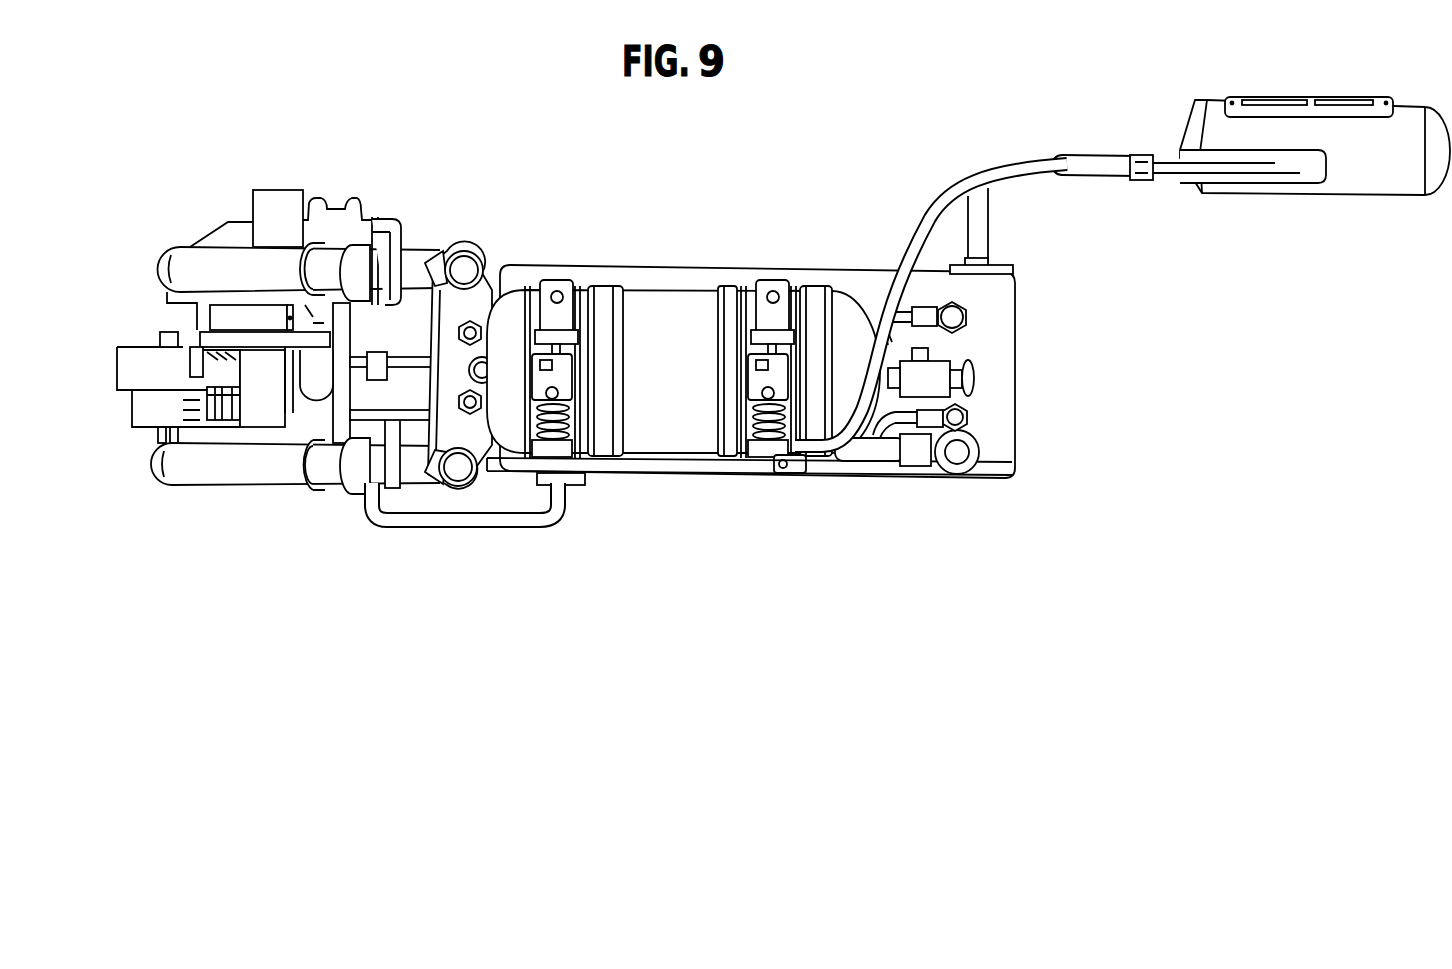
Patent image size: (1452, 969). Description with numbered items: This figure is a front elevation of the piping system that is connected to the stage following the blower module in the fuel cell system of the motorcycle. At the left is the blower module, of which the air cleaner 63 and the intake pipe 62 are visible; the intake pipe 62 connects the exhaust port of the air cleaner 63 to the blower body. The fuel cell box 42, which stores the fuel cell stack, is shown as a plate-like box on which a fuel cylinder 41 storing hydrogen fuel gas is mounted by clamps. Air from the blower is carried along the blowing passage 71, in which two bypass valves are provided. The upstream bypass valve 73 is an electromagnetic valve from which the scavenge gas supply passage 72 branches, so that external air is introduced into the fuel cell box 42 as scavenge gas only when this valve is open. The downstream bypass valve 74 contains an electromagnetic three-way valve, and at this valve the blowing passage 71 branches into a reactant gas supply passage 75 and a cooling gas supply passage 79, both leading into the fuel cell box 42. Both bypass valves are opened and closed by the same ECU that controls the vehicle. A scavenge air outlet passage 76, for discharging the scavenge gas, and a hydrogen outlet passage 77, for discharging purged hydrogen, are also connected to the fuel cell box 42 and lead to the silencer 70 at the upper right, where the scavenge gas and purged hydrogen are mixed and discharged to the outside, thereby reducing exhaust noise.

The fuel cylinder 41 is at (690, 325).
The fuel cell box 42 is at (1003, 462).
The intake pipe 62 is at (313, 392).
The air cleaner 63 is at (375, 235).
The silencer 70 is at (1358, 182).
The blowing passage 71 is at (690, 478).
The scavenge gas supply passage 72 is at (505, 520).
The upstream bypass valve 73 is at (362, 490).
The downstream bypass valve 74 is at (778, 470).
The reactant gas supply passage 75 is at (827, 443).
The scavenge air outlet passage 76 is at (986, 243).
The hydrogen outlet passage 77 is at (1028, 178).
The cooling gas supply passage 79 is at (877, 450).